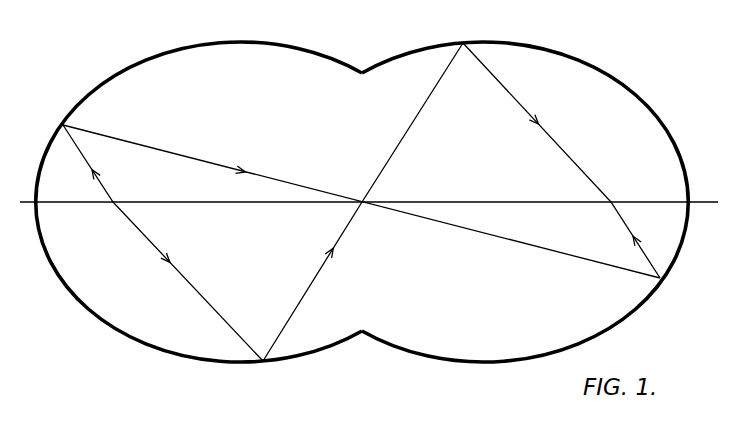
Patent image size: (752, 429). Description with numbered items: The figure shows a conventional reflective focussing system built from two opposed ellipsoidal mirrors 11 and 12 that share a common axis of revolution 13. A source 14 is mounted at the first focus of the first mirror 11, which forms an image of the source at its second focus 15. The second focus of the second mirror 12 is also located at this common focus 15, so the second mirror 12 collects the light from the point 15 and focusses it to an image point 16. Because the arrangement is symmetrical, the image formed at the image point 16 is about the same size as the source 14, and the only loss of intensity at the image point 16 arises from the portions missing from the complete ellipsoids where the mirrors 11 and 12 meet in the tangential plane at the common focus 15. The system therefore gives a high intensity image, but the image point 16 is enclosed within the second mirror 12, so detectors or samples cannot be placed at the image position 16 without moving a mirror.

The first ellipsoidal mirror 11 is at (199, 191).
The second ellipsoidal mirror 12 is at (525, 191).
The common axis of revolution 13 is at (694, 201).
The source 14 is at (163, 243).
The common focus 15 is at (361, 202).
The image point 16 is at (561, 160).